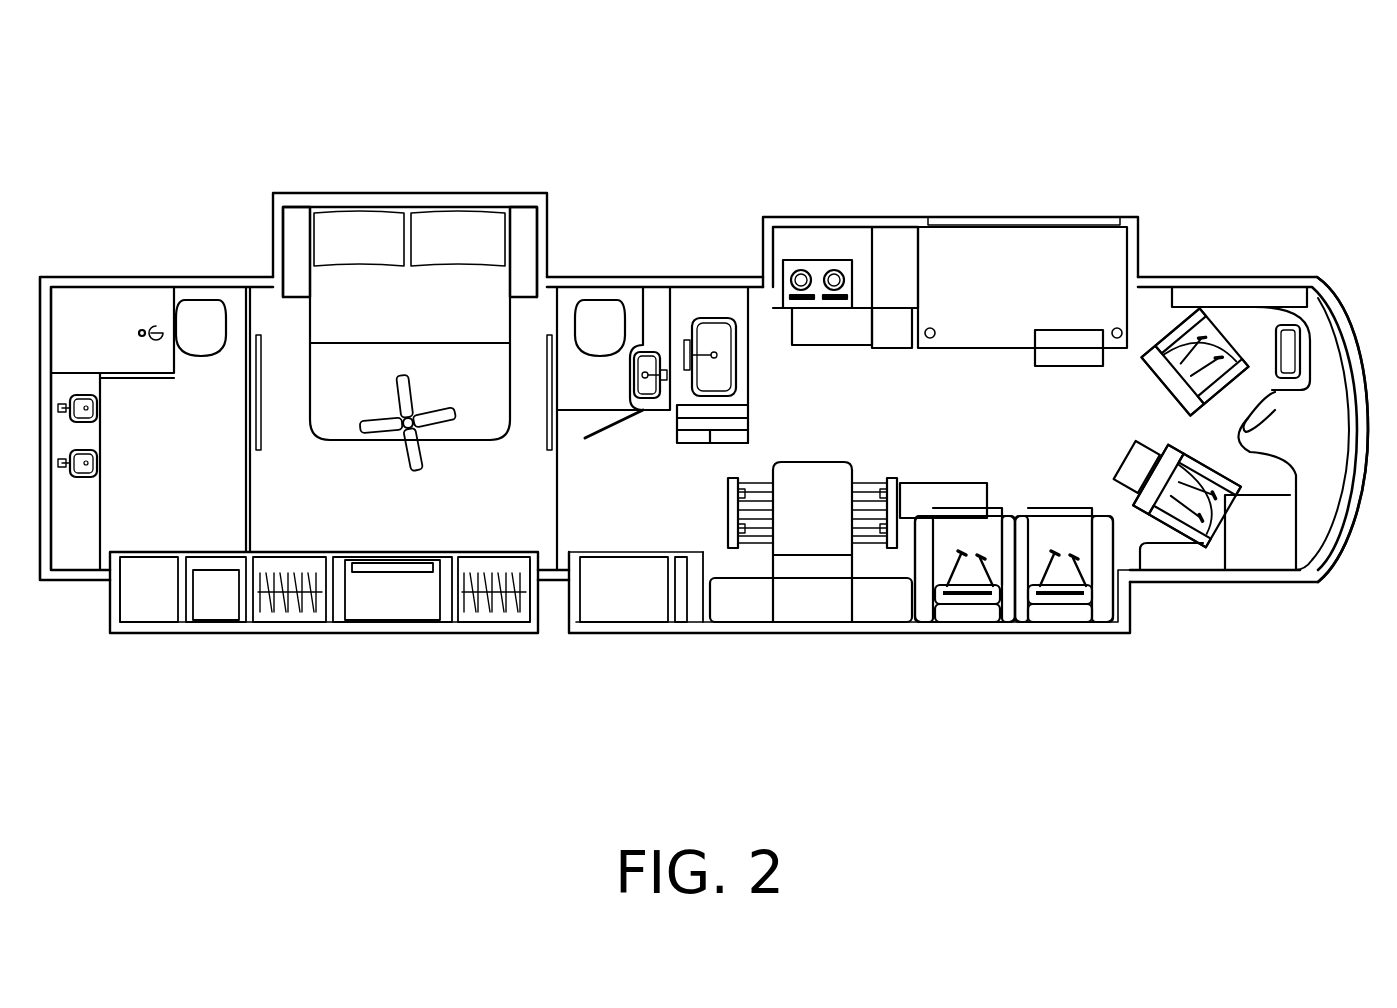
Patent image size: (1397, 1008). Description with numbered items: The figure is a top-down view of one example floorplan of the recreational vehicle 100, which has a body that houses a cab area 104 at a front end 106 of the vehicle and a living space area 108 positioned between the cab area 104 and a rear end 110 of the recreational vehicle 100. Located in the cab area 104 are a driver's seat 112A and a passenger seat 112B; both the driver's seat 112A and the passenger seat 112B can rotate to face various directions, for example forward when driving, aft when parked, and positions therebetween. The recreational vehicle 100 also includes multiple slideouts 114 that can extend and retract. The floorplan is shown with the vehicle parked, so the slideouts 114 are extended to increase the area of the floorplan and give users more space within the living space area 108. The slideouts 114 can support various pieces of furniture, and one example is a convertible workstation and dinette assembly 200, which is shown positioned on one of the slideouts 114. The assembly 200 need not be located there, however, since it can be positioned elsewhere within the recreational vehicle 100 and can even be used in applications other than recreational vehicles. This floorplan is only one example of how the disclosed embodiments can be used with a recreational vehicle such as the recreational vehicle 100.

The recreational vehicle 100 is at (197, 90).
The cab area 104 is at (1198, 162).
The front end 106 is at (1333, 327).
The living space area 108 is at (636, 178).
The rear end 110 is at (45, 578).
The driver's seat 112A is at (1210, 315).
The passenger seat 112B is at (1186, 548).
The slideouts 114 is at (305, 198).
The convertible workstation and dinette assembly 200 is at (885, 611).